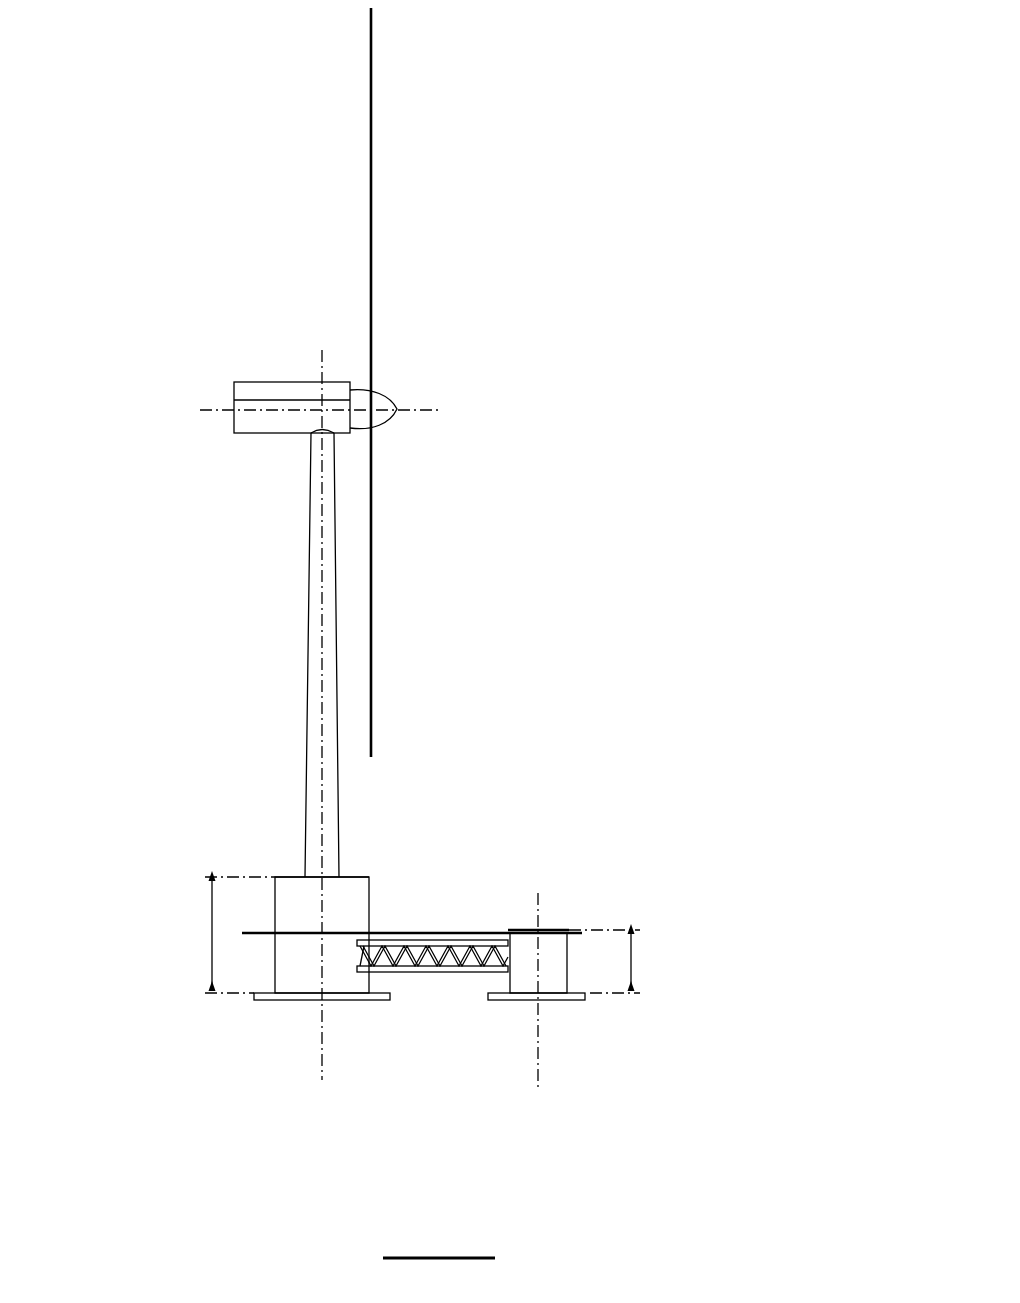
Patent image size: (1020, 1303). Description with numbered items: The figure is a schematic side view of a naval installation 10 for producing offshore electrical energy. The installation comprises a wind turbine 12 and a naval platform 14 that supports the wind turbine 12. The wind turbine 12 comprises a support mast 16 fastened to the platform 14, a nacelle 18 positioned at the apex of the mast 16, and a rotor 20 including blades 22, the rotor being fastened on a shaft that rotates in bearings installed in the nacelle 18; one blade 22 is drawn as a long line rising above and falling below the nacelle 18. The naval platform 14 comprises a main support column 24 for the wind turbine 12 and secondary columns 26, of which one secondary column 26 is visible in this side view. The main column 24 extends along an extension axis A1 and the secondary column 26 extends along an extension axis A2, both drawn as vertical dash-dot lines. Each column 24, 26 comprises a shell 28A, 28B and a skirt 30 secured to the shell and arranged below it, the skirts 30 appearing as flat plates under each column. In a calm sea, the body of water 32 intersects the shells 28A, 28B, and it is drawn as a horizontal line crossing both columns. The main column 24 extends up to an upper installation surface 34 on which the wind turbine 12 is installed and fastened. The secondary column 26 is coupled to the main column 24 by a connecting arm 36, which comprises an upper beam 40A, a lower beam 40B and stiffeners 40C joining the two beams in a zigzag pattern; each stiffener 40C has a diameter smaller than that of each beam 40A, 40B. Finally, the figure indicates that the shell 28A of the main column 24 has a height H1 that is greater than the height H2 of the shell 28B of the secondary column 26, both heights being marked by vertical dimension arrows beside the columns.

The naval installation 10 is at (672, 312).
The wind turbine 12 is at (215, 348).
The naval platform 14 is at (240, 857).
The support mast 16 is at (305, 655).
The nacelle 18 is at (213, 412).
The rotor 20 is at (400, 390).
The blades 22 is at (380, 145).
The main support column 24 is at (366, 870).
The secondary column 26 is at (562, 920).
The shell 28A is at (375, 905).
The shell 28B is at (575, 945).
The skirt 30 is at (373, 1005).
The body of water 32 is at (512, 925).
The upper installation surface 34 is at (290, 875).
The connecting arm 36 is at (432, 998).
The upper beam 40A is at (455, 940).
The lower beam 40B is at (475, 974).
The stiffener 40C is at (420, 975).
The height of the main column shell H1 is at (226, 935).
The height of the secondary column shell H2 is at (640, 961).
The extension axis of the main column A1 is at (322, 1055).
The extension axis of the secondary column A2 is at (538, 1058).